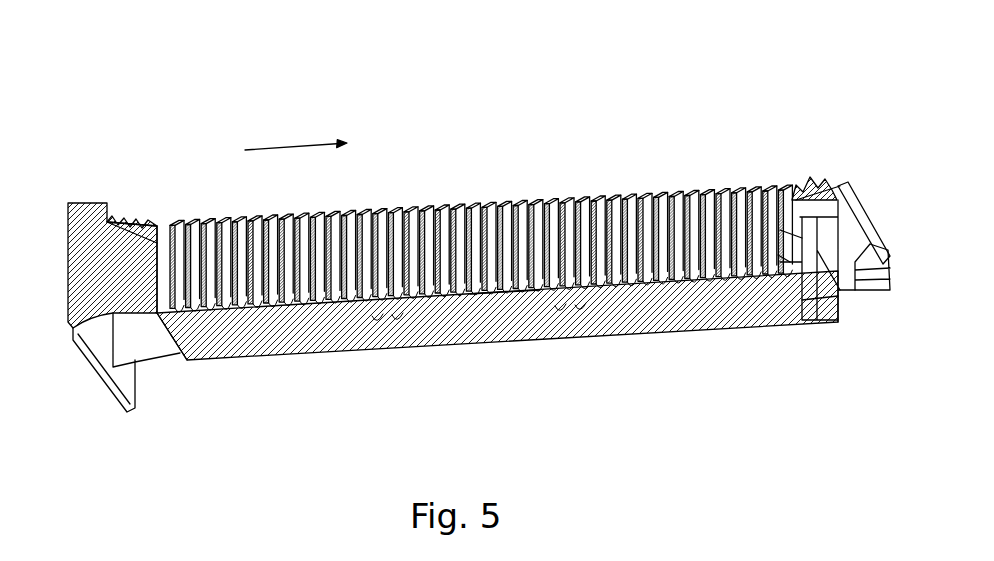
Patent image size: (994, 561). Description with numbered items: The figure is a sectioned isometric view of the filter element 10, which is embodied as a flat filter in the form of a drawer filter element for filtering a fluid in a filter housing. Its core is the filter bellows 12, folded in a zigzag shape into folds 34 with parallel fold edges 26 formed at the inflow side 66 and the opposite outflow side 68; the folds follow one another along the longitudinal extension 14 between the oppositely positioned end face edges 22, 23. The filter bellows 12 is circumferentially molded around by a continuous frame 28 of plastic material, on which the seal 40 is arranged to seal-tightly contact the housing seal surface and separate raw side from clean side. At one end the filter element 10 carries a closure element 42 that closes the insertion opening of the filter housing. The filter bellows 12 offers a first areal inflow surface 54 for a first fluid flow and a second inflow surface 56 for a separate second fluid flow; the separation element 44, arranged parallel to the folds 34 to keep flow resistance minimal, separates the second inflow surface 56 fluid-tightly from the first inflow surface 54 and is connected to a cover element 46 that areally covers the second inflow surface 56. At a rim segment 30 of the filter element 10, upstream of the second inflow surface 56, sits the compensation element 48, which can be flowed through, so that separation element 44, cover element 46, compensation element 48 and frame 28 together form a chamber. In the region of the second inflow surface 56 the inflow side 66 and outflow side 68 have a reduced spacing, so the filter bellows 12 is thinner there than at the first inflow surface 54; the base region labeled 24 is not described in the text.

The filter element 10 is at (548, 140).
The filter bellows 12 is at (322, 352).
The longitudinal extension 14 is at (288, 148).
The end face edge 22 is at (163, 277).
The end face edge 23 is at (803, 222).
The base 24 is at (503, 318).
The fold edges 26 is at (490, 187).
The frame 28 is at (845, 195).
The rim segment 30 is at (766, 175).
The folds 34 is at (412, 185).
The seal 40 is at (143, 225).
The closure element 42 is at (97, 208).
The separation element 44 is at (778, 241).
The cover element 46 is at (817, 318).
The compensation element 48 is at (845, 285).
The first inflow surface 54 is at (386, 338).
The second inflow surface 56 is at (780, 262).
The inflow side 66 is at (568, 330).
The outflow side 68 is at (605, 192).